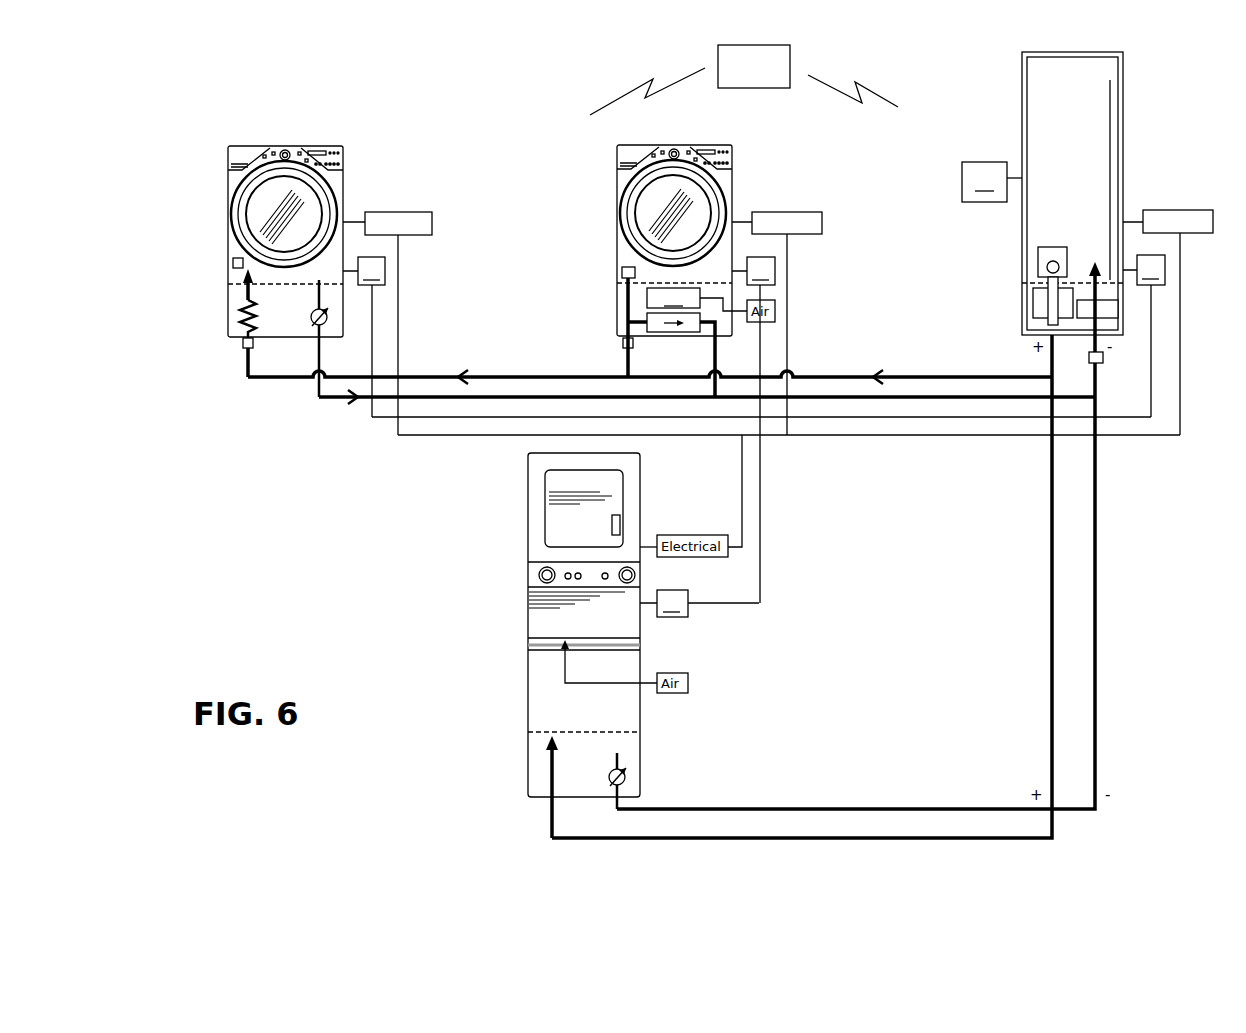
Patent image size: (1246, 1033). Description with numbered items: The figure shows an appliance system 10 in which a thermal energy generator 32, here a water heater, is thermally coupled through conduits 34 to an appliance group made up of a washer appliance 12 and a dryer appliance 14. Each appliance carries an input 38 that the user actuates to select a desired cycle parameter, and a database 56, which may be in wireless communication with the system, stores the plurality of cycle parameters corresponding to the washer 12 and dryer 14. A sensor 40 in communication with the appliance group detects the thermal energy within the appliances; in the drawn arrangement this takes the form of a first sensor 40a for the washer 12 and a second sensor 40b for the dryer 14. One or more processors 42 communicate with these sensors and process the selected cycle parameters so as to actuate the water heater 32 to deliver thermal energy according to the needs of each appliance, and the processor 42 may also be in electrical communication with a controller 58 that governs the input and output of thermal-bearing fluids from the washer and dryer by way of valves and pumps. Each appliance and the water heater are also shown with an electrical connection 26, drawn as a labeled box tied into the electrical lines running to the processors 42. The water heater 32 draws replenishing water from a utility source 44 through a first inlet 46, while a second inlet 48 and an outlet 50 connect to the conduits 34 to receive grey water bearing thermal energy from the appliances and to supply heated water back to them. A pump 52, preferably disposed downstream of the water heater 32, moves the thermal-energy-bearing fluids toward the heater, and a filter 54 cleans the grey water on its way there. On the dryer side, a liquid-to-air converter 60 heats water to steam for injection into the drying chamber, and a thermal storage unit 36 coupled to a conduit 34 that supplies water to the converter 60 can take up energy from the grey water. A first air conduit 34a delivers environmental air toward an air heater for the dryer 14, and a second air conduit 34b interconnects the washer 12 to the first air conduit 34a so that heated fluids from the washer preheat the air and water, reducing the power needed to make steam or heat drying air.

The appliance system 10 is at (389, 55).
The washer appliance 12 is at (316, 118).
The dryer appliance 14 is at (734, 134).
The electrical connection 26 is at (425, 212).
The thermal energy generator (water heater) 32 is at (1134, 88).
The conduits 34 is at (938, 360).
The first air conduit 34a is at (626, 301).
The second air conduit 34b is at (718, 329).
The thermal storage unit 36 is at (673, 298).
The input 38 is at (341, 156).
The sensor 40 is at (390, 259).
The first sensor 40a is at (233, 262).
The second sensor 40b is at (622, 272).
The processor 42 is at (761, 436).
The utility water source 44 is at (984, 182).
The first inlet 46 is at (1017, 184).
The second inlet 48 is at (1097, 382).
The outlet 50 is at (1050, 366).
The pump 52 is at (1103, 358).
The filter 54 is at (1118, 310).
The database 56 is at (790, 66).
The controller 58 is at (243, 345).
The liquid-to-air converter 60 is at (667, 333).